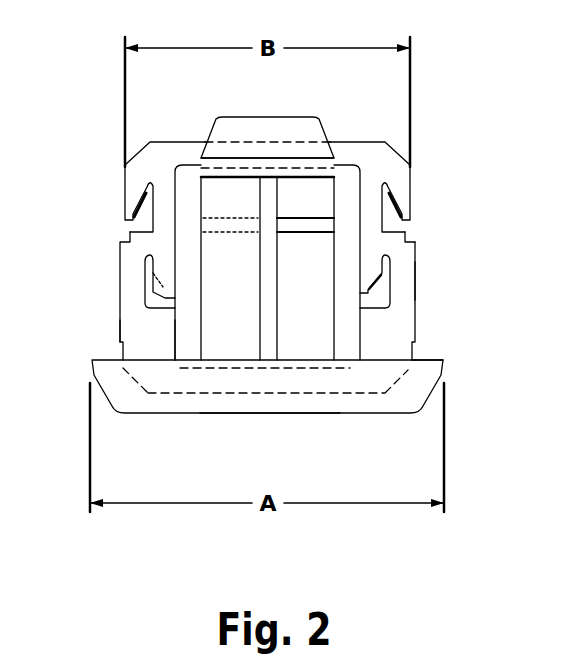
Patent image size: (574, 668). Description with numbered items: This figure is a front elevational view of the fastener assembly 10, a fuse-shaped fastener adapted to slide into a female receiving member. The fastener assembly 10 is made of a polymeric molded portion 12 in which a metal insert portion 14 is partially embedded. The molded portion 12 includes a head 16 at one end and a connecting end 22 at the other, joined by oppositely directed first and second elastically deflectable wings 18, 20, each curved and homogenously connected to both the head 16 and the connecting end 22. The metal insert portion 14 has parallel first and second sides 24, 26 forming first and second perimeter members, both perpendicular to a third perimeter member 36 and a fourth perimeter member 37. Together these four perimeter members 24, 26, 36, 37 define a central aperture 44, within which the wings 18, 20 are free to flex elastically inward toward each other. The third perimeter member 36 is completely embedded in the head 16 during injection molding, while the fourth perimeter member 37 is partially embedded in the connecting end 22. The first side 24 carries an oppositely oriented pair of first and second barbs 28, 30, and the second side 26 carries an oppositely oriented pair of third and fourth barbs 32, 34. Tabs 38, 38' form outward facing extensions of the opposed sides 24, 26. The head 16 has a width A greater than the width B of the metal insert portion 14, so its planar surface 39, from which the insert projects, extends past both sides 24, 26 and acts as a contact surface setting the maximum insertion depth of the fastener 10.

The fastener assembly 10 is at (462, 146).
The molded portion 12 is at (434, 393).
The metal insert portion 14 is at (414, 239).
The head 16 is at (312, 402).
The first elastically deflectable wing 18 is at (295, 296).
The second elastically deflectable wing 20 is at (220, 296).
The connecting end 22 is at (247, 130).
The first side 24 is at (408, 260).
The second side 26 is at (130, 253).
The first barb 28 is at (405, 200).
The second barb 30 is at (368, 296).
The third barb 32 is at (130, 212).
The fourth barb 34 is at (165, 283).
The third perimeter member 36 is at (174, 372).
The fourth perimeter member 37 is at (303, 150).
The tab 38 is at (454, 283).
The tab 38' is at (79, 362).
The planar surface 39 is at (441, 356).
The central aperture 44 is at (190, 341).